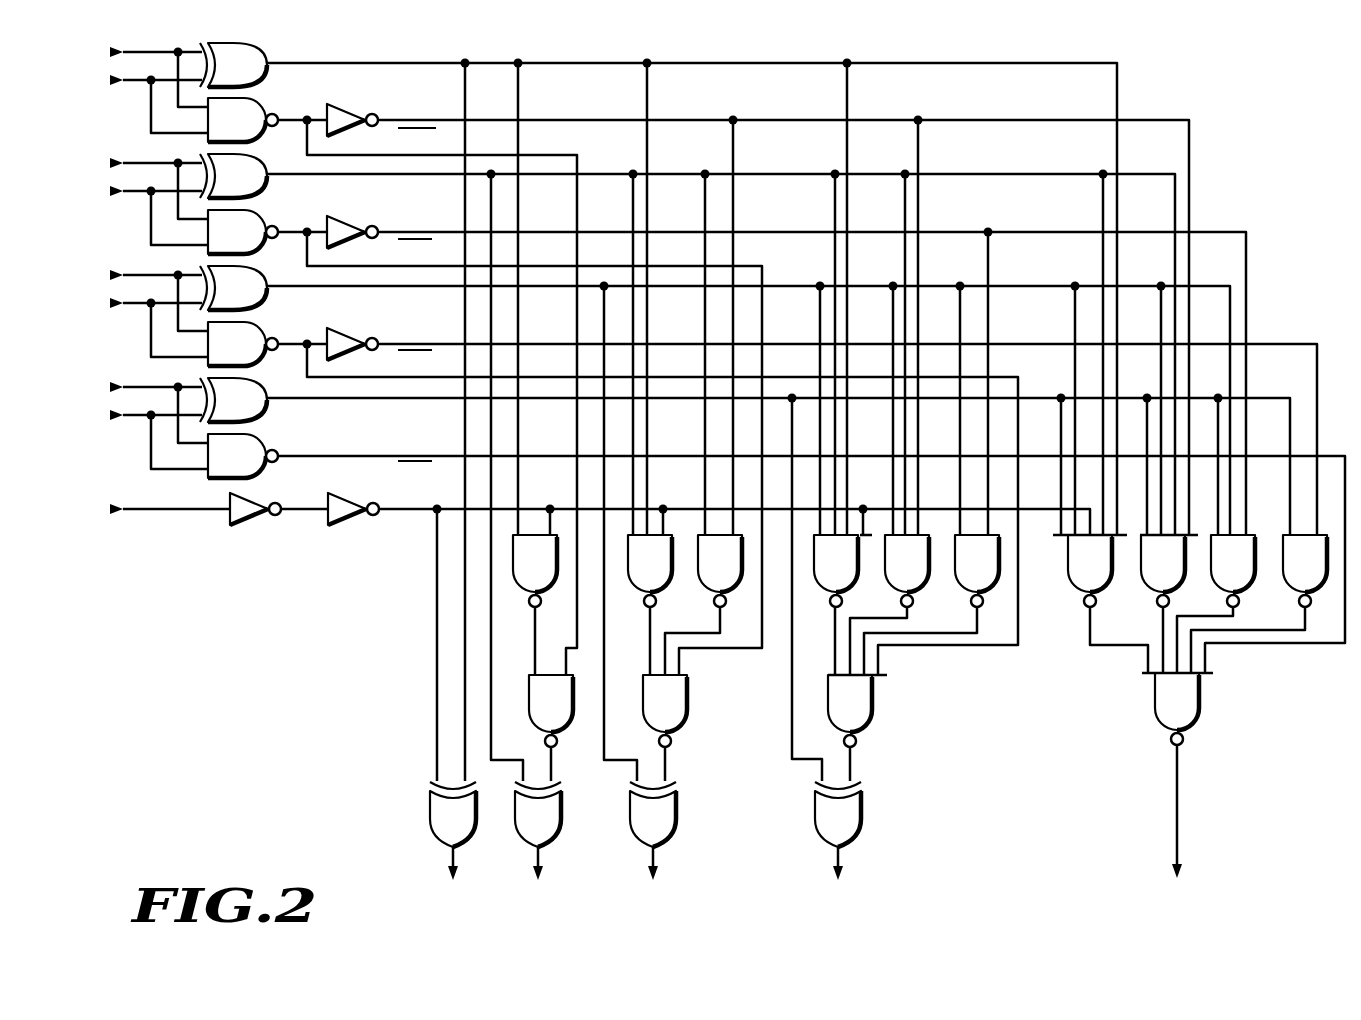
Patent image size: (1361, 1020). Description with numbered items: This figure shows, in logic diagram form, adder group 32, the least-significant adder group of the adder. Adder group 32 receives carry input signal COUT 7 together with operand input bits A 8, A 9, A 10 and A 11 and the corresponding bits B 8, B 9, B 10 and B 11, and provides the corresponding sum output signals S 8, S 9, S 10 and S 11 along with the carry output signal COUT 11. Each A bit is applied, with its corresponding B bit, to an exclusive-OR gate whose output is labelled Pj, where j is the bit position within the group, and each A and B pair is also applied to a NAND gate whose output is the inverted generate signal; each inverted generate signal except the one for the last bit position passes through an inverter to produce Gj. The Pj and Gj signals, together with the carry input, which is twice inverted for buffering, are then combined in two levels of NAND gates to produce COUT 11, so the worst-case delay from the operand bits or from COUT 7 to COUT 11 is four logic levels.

The adder group 32 is at (694, 476).
The carry-in COUT7 input inverters 7 is at (211, 511).
The sum bit S8 output exclusive-OR gate 8 is at (453, 850).
The sum bit S9 output exclusive-OR gate 9 is at (538, 850).
The sum bit S10 output exclusive-OR gate 10 is at (653, 850).
The sum bit S11 output exclusive-OR gate 11 is at (838, 849).